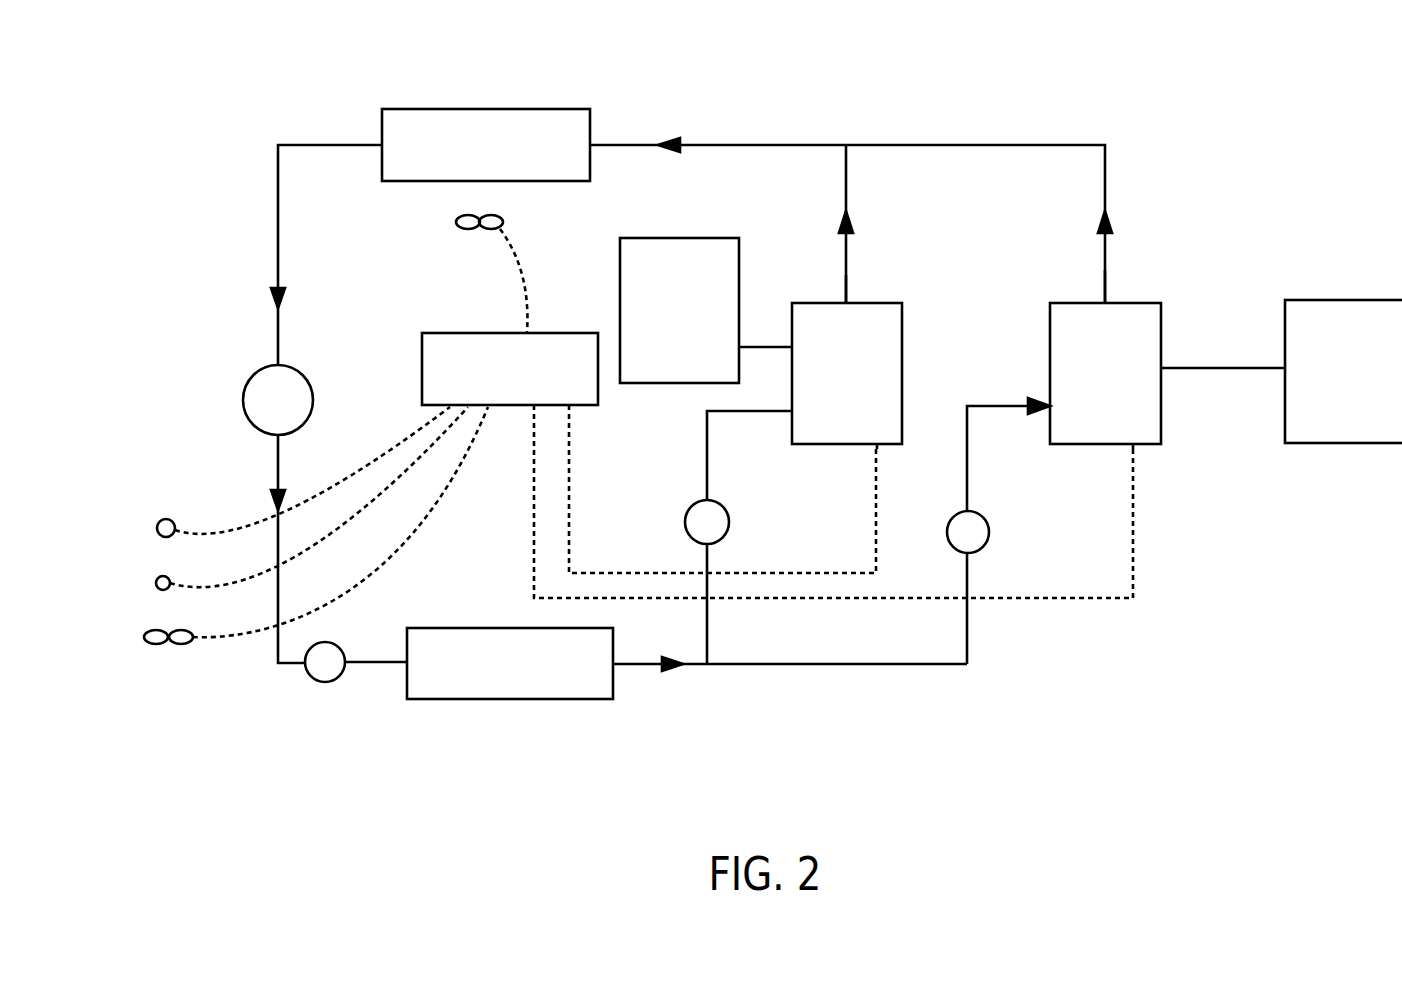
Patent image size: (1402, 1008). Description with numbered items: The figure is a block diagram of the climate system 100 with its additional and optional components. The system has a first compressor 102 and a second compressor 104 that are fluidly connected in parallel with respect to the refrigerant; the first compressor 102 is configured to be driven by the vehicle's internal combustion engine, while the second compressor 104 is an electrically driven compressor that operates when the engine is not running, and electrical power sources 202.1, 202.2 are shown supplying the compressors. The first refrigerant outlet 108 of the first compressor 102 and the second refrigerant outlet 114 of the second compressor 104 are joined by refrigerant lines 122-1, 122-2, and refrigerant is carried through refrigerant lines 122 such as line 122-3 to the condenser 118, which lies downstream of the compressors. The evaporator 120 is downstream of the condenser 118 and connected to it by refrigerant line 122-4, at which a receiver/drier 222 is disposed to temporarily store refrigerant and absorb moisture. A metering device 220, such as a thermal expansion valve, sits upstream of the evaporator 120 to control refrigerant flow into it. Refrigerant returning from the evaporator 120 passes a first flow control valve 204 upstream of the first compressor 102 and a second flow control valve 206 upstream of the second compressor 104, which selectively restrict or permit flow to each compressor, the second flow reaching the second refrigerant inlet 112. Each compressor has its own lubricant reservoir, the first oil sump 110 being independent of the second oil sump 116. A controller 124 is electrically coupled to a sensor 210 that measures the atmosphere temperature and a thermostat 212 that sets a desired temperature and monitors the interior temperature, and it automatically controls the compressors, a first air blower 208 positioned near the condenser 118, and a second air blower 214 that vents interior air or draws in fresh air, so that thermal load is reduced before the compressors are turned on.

The climate system 100 is at (187, 44).
The first compressor 102 is at (885, 302).
The second compressor 104 is at (1135, 298).
The first refrigerant outlet 108 is at (846, 275).
The first oil sump 110 is at (845, 430).
The second refrigerant inlet 112 is at (1010, 403).
The second refrigerant outlet 114 is at (1105, 270).
The second oil sump 116 is at (1108, 430).
The condenser 118 is at (512, 109).
The evaporator 120 is at (487, 700).
The refrigerant lines 122 is at (686, 358).
The refrigerant line 122-1 is at (846, 187).
The refrigerant line 122-2 is at (975, 145).
The refrigerant line 122-3 is at (747, 145).
The refrigerant line 122-4 is at (343, 145).
The controller 124 is at (422, 368).
The electrical power source 202.1 is at (1295, 300).
The electrical power source 202.2 is at (647, 238).
The first flow control valve 204 is at (690, 510).
The second flow control valve 206 is at (987, 545).
The first air blower 208 is at (457, 225).
The sensor 210 is at (157, 528).
The thermostat 212 is at (156, 582).
The second air blower 214 is at (144, 637).
The metering device 220 is at (325, 683).
The receiver/drier 222 is at (253, 377).